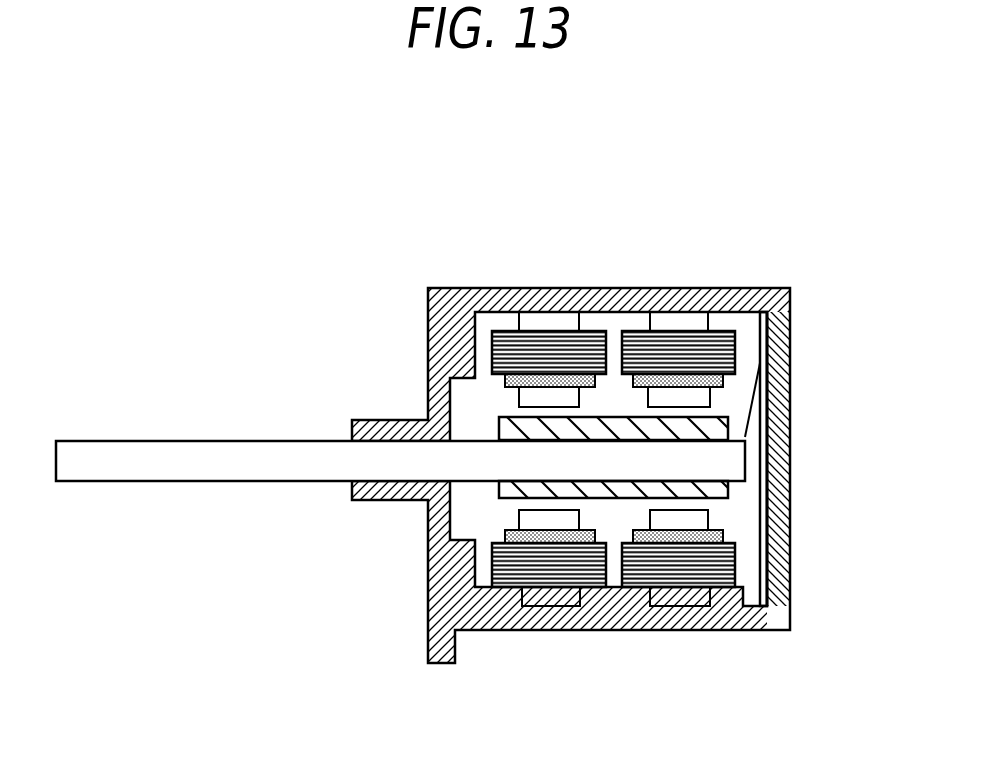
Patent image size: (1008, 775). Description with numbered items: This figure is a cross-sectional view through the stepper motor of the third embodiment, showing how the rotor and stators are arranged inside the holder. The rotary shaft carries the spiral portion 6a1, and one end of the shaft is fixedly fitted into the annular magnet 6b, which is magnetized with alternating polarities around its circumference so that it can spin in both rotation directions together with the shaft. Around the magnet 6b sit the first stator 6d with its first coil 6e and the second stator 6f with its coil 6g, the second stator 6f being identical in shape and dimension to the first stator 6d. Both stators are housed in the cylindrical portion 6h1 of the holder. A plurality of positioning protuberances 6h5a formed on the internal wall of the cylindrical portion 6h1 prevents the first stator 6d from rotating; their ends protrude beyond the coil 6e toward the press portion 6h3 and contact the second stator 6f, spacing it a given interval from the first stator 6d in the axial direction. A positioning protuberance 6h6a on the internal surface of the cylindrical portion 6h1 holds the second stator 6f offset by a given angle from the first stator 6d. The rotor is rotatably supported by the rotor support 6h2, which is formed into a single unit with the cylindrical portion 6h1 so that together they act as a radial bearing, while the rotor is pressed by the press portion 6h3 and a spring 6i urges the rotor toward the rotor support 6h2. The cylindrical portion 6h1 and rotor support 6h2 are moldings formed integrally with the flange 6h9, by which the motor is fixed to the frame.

The spiral portion 6a1 is at (143, 462).
The magnet 6b is at (728, 486).
The first stator 6d is at (538, 322).
The first coil 6e is at (548, 568).
The second stator 6f is at (682, 322).
The coil 6g is at (675, 567).
The cylindrical portion 6h1 is at (757, 297).
The rotor support 6h2 is at (443, 333).
The press portion 6h3 is at (790, 437).
The positioning protuberances 6h5a is at (622, 310).
The positioning protuberance 6h6a is at (727, 604).
The flange 6h9 is at (447, 667).
The spring 6i is at (762, 364).